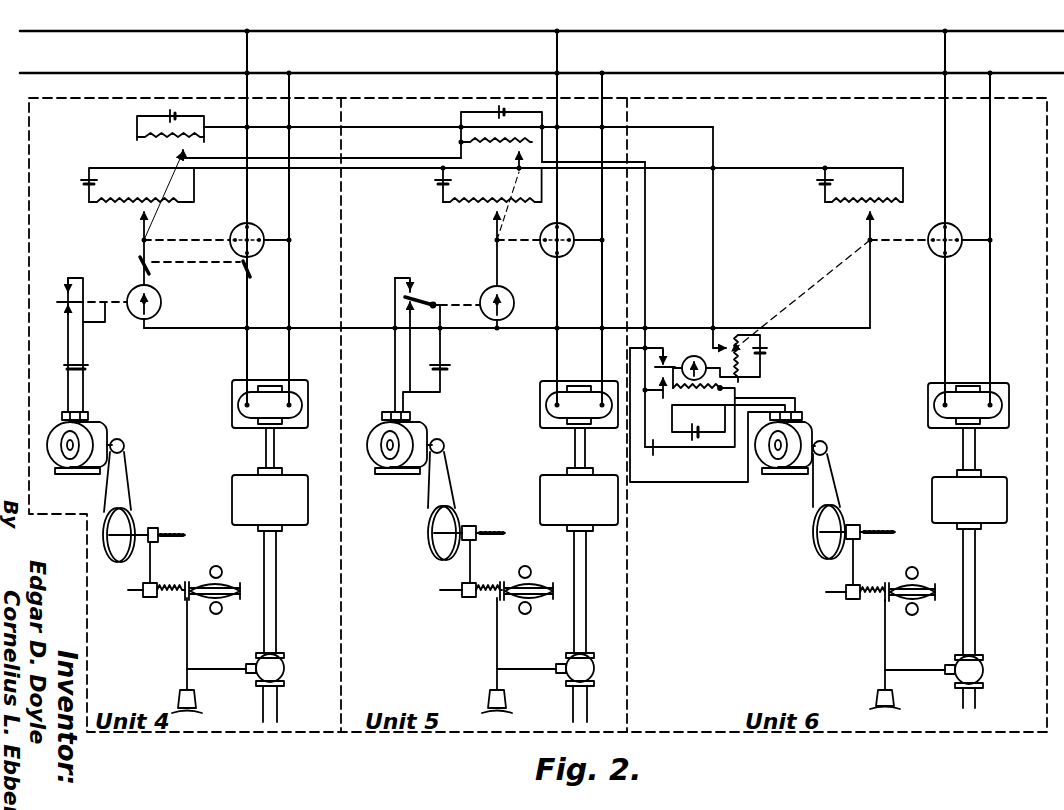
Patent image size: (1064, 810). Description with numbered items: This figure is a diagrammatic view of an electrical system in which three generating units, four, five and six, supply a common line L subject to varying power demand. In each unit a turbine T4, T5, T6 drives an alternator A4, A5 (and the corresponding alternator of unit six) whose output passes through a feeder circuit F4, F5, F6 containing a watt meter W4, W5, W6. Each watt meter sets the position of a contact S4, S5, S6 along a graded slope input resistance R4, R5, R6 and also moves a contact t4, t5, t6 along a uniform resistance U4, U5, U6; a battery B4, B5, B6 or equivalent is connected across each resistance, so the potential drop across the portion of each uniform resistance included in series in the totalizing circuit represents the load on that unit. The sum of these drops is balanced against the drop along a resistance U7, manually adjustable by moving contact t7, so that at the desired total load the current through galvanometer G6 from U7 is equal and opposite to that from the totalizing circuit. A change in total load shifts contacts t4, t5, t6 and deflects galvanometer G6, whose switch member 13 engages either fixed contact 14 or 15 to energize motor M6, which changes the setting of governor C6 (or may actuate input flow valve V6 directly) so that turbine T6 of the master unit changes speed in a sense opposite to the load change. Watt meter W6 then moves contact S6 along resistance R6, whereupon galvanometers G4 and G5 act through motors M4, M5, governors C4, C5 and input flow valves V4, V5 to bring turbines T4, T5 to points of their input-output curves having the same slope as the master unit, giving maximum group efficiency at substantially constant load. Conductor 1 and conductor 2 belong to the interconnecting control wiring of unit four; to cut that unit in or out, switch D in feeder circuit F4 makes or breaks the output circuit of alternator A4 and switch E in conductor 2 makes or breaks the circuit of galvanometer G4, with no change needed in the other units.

The line L is at (542, 52).
The conductor 1 is at (386, 172).
The conductor 2 is at (305, 332).
The uniform resistance U4 is at (150, 140).
The contact t4 is at (192, 151).
The battery B4 is at (88, 184).
The slope input resistance R4 is at (128, 207).
The contact S4 is at (152, 224).
The watt meter W4 is at (254, 226).
The switch E is at (139, 264).
The switch D is at (240, 268).
The output feeder circuit F4 is at (289, 304).
The galvanometer G4 is at (162, 302).
The motor M4 is at (96, 432).
The alternator A4 is at (270, 404).
The turbine T4 is at (270, 479).
The governor C4 is at (219, 567).
The input flow valve V4 is at (280, 667).
The uniform resistance U5 is at (472, 143).
The contact t5 is at (514, 158).
The battery B5 is at (442, 186).
The slope input resistance R5 is at (476, 207).
The contact S5 is at (504, 222).
The watt meter W5 is at (564, 226).
The galvanometer G5 is at (490, 290).
The output feeder circuit F5 is at (602, 290).
The motor M5 is at (418, 432).
The alternator A5 is at (579, 404).
The turbine T5 is at (579, 479).
The governor C5 is at (529, 567).
The input flow valve V5 is at (590, 667).
The battery B6 is at (820, 186).
The slope-output graded resistance R6 is at (842, 207).
The contact S6 is at (876, 222).
The watt meter W6 is at (952, 226).
The output feeder circuit F6 is at (990, 177).
The switch member 13 is at (660, 345).
The fixed contact 14 is at (685, 363).
The fixed contact 15 is at (661, 396).
The galvanometer G6 is at (695, 356).
The uniform resistance U6 is at (745, 345).
The contact t6 is at (745, 366).
The contact t7 is at (722, 387).
The resistance U7 is at (737, 402).
The motor M6 is at (785, 475).
The turbine T6 is at (969, 478).
The governor C6 is at (917, 568).
The input flow valve V6 is at (979, 667).